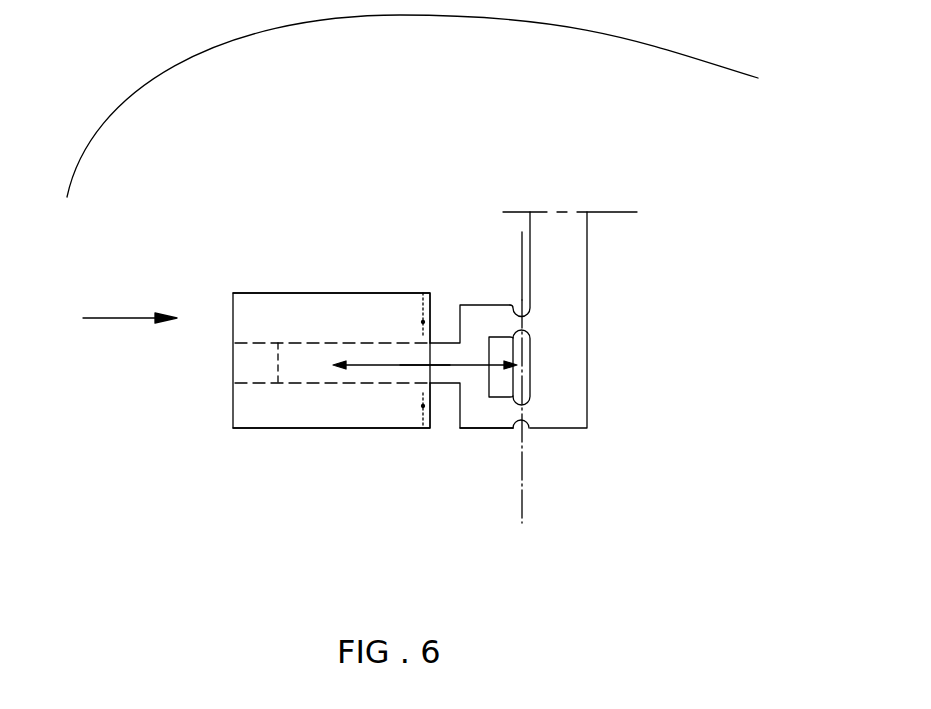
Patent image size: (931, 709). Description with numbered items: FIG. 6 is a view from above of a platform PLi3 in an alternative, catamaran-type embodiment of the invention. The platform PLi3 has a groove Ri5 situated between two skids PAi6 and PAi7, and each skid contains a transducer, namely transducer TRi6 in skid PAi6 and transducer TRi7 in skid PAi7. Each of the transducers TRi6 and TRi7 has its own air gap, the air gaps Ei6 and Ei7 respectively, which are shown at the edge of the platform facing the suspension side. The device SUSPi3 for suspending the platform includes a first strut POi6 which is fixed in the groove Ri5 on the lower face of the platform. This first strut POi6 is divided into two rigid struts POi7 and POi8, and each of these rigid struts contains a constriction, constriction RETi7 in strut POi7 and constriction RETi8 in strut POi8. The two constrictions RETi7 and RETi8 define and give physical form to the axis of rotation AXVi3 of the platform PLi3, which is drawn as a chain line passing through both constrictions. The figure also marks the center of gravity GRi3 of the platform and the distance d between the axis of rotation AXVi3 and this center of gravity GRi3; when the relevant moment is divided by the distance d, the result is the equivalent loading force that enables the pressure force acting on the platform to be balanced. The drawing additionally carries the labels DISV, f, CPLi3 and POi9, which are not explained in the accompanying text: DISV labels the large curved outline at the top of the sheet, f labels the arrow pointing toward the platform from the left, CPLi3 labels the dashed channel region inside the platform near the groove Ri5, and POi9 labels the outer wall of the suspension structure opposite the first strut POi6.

The valve disc DISV is at (377, 134).
The flow direction f is at (130, 306).
The platform PLi3 is at (351, 293).
The skid PAi6 is at (290, 308).
The skid PAi7 is at (288, 430).
The channel CPLi3 is at (257, 430).
The groove Ri5 is at (268, 384).
The transducer TRi6 is at (429, 293).
The transducer TRi7 is at (428, 432).
The air gap Ei6 is at (423, 322).
The air gap Ei7 is at (423, 406).
The center of gravity GRi3 is at (402, 369).
The distance d is at (423, 356).
The first strut POi6 is at (446, 385).
The rigid strut POi7 is at (480, 305).
The constriction RETi7 is at (522, 321).
The right wall POi9 is at (588, 353).
The constriction RETi8 is at (524, 413).
The rigid strut POi8 is at (502, 432).
The suspension device SUSPi3 is at (478, 432).
The axis of rotation AXVi3 is at (521, 243).